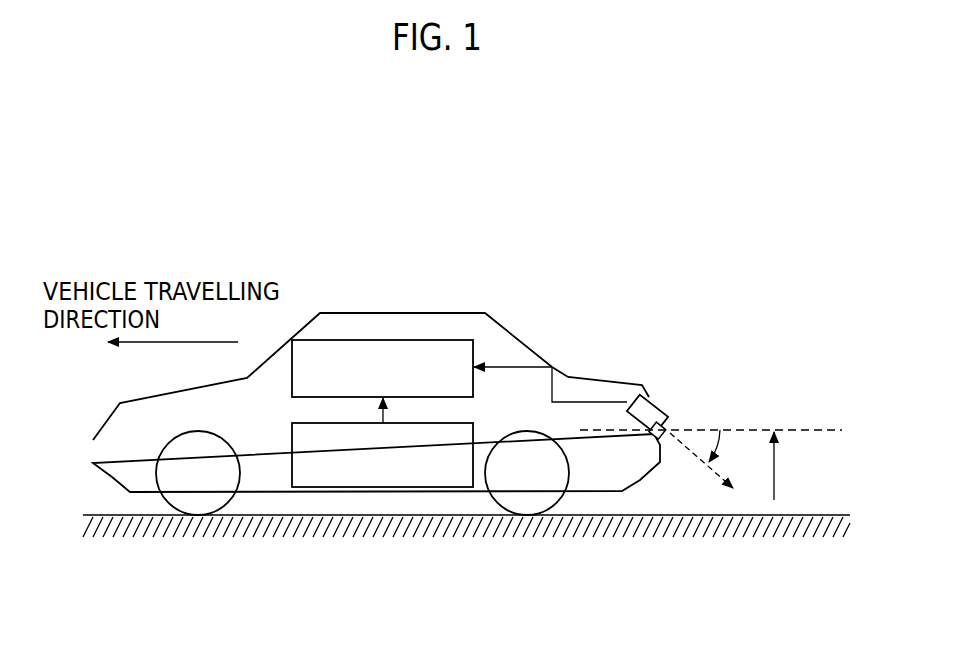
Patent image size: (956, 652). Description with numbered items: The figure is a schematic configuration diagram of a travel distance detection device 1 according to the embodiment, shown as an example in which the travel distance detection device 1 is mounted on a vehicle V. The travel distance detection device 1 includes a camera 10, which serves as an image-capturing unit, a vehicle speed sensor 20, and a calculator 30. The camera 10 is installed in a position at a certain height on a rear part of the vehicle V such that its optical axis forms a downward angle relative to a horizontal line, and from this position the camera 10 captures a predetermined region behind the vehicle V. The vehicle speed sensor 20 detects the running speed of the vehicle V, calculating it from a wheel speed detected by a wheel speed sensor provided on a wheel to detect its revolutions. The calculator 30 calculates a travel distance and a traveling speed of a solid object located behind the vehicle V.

The travel distance detection device 1 is at (637, 247).
The vehicle V is at (393, 313).
The camera 10 is at (653, 417).
The vehicle speed sensor 20 is at (408, 480).
The calculator 30 is at (453, 340).